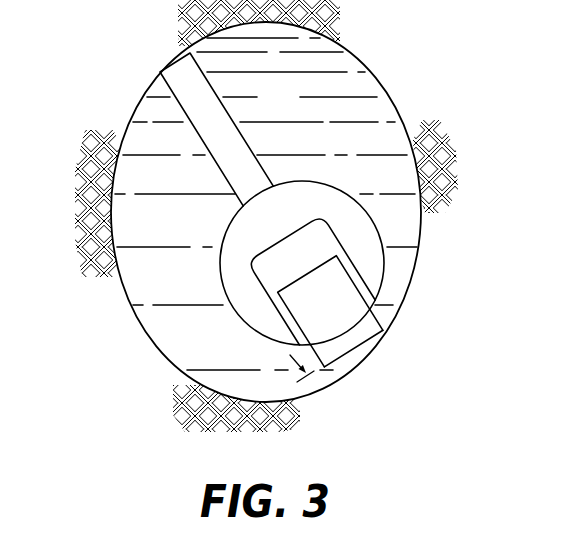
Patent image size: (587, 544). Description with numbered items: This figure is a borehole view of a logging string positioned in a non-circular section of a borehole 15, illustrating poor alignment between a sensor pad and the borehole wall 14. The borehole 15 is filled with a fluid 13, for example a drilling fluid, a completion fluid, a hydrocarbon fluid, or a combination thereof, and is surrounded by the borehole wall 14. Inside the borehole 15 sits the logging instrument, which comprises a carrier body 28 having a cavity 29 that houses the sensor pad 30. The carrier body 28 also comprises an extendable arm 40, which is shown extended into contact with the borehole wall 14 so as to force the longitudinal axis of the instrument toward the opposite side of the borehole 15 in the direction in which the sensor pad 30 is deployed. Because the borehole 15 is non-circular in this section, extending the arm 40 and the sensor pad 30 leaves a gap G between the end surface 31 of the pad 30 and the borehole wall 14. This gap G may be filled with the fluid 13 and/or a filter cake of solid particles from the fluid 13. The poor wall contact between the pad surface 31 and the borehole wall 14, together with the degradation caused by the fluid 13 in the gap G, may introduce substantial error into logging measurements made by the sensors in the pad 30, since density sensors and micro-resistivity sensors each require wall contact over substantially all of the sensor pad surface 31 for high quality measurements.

The fluid 13 is at (291, 107).
The borehole wall 14 is at (396, 107).
The borehole 15 is at (350, 84).
The carrier body 28 is at (387, 257).
The cavity 29 is at (333, 232).
The sensor pad 30 is at (372, 311).
The end surface of pad 31 is at (349, 352).
The extendable arm 40 is at (177, 78).
The gap G is at (320, 398).